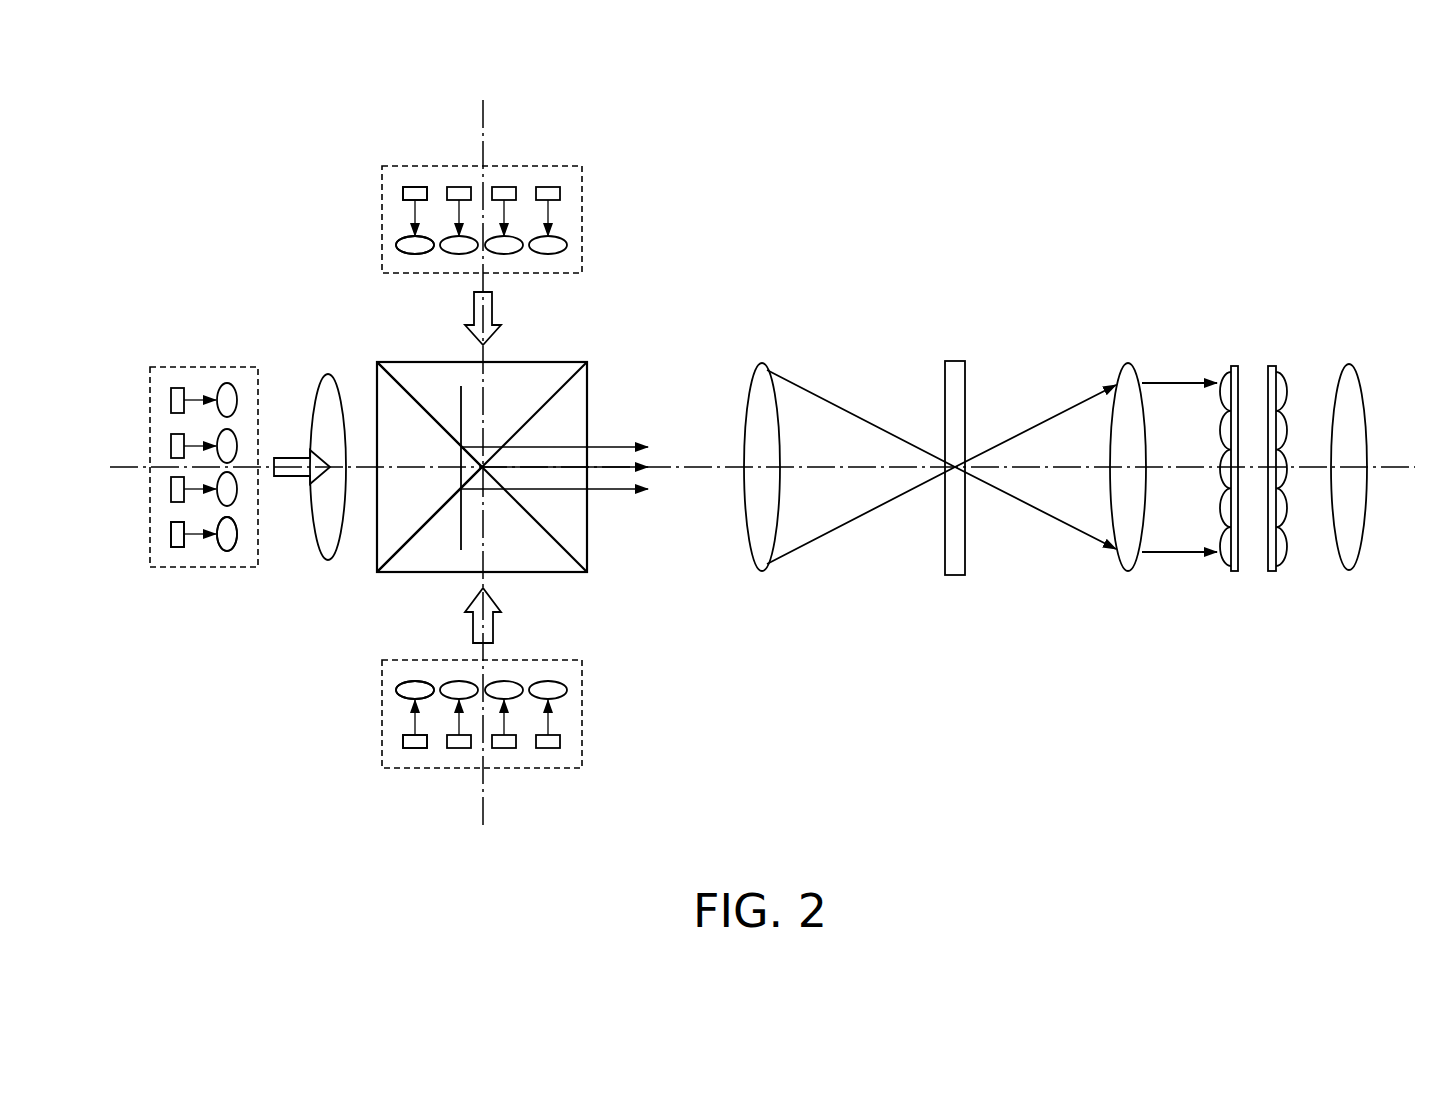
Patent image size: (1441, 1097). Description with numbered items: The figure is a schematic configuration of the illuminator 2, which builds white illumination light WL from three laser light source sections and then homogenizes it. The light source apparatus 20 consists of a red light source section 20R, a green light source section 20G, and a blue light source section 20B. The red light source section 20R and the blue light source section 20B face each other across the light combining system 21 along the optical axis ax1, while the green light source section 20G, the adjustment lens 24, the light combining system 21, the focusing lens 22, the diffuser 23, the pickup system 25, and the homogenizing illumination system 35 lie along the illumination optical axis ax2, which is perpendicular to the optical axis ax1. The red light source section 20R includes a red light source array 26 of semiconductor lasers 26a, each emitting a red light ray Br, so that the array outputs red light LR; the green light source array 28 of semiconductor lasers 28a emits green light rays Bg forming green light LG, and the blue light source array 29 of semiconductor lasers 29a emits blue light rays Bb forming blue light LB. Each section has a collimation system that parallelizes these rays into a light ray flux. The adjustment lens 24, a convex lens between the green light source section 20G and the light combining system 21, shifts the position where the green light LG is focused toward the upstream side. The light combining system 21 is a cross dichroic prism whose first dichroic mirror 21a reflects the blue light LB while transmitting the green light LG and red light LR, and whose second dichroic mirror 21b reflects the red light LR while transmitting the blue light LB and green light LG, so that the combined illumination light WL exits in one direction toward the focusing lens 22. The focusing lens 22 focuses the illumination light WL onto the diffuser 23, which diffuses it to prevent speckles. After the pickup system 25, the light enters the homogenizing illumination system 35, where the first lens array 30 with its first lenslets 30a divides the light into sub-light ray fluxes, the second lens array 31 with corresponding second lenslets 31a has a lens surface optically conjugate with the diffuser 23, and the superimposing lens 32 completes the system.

The illuminator 2 is at (1193, 138).
The light source apparatus 20 is at (367, 471).
The blue light source section 20B is at (382, 170).
The green light source section 20G is at (183, 569).
The red light source section 20R is at (382, 762).
The light combining system 21 is at (557, 357).
The first dichroic mirror 21a is at (420, 404).
The second dichroic mirror 21b is at (384, 556).
The focusing lens 22 is at (763, 378).
The diffuser 23 is at (955, 362).
The adjustment lens 24 is at (322, 395).
The pickup system 25 is at (1130, 378).
The red light source array 26 is at (561, 747).
The semiconductor laser 26a is at (412, 749).
The green light source array 28 is at (164, 384).
The semiconductor laser 28a is at (171, 535).
The blue light source array 29 is at (560, 188).
The semiconductor laser 29a is at (412, 187).
The first lens array 30 is at (1222, 469).
The first lenslet 30a is at (1222, 571).
The second lens array 31 is at (1287, 469).
The second lenslet 31a is at (1280, 571).
The superimposing lens 32 is at (1340, 380).
The homogenizing illumination system 35 is at (1349, 278).
The blue light ray Bb is at (549, 212).
The green light ray Bg is at (192, 400).
The red light ray Br is at (549, 722).
The blue light LB is at (472, 300).
The green light LG is at (665, 410).
The red light LR is at (715, 410).
The illumination light WL is at (738, 380).
The optical axis ax1 is at (490, 112).
The illumination optical axis ax2 is at (1410, 470).